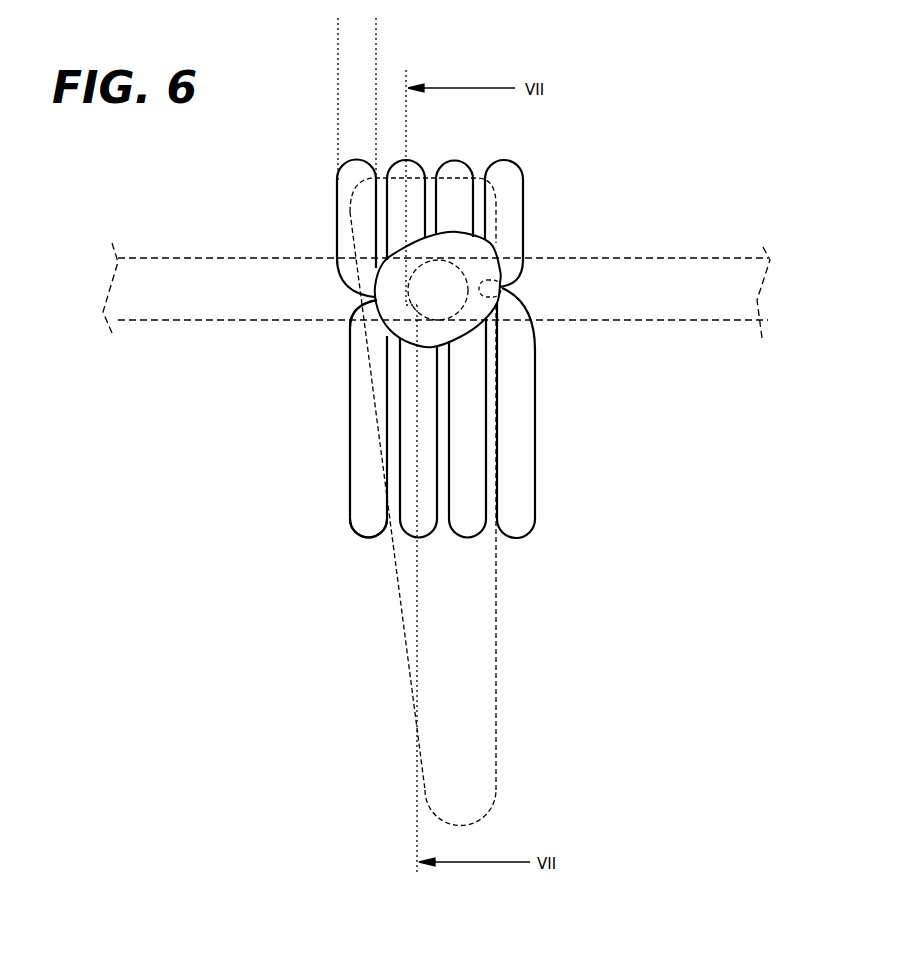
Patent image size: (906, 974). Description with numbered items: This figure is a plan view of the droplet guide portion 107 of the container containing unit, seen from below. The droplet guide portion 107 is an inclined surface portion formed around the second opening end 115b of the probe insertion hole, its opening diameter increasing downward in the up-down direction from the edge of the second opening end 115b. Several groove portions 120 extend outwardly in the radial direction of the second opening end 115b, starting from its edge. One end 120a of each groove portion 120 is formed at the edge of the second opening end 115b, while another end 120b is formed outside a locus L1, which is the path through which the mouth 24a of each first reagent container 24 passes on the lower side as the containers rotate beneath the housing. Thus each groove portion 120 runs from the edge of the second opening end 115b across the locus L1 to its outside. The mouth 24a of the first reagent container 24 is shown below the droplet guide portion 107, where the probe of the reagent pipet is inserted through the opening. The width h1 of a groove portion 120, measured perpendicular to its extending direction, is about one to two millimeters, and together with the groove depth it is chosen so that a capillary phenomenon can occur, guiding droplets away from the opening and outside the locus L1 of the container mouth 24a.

The droplet guide portion 107 is at (425, 493).
The first reagent container 24 is at (497, 730).
The mouth 24a is at (417, 310).
The second opening end 115b is at (503, 290).
The groove portion 120 is at (468, 458).
The one end 120a is at (372, 318).
The another end 120b is at (368, 540).
The locus L1 is at (713, 259).
The width h1 is at (420, 39).